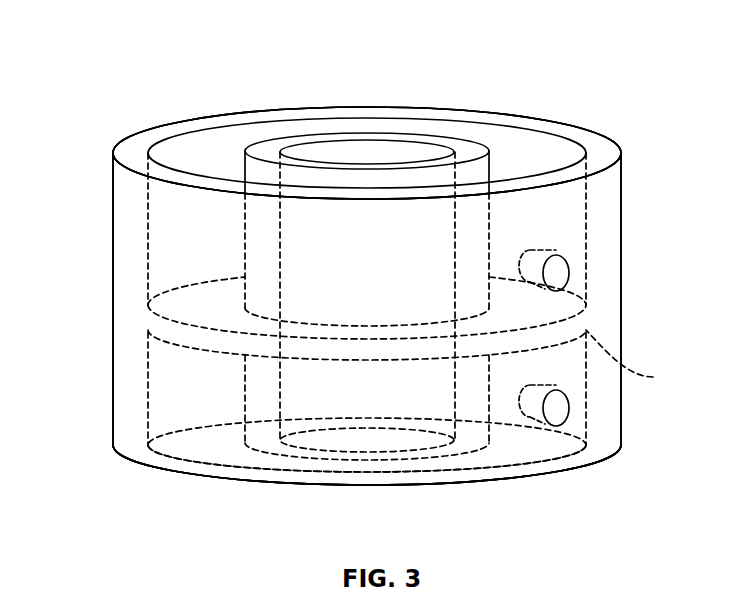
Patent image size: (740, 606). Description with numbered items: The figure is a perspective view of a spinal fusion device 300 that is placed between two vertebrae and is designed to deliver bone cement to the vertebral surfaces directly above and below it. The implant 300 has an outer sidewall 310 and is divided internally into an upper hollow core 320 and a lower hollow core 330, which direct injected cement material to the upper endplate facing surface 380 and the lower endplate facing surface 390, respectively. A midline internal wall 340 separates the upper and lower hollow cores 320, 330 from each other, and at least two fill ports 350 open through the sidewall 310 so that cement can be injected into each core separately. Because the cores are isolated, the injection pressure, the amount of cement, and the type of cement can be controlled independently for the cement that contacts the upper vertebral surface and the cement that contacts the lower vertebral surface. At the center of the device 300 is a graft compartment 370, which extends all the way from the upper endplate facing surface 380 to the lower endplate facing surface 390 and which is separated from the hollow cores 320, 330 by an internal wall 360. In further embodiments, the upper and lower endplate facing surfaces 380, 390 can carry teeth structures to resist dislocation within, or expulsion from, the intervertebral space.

The spinal fusion device 300 is at (123, 53).
The sidewall 310 is at (102, 281).
The upper hollow core 320 is at (193, 147).
The lower hollow core 330 is at (205, 455).
The midline internal wall 340 is at (424, 334).
The fill ports 350 is at (556, 273).
The internal wall 360 is at (273, 147).
The graft compartment 370 is at (388, 151).
The upper endplate facing surface 380 is at (551, 106).
The lower endplate facing surface 390 is at (468, 495).